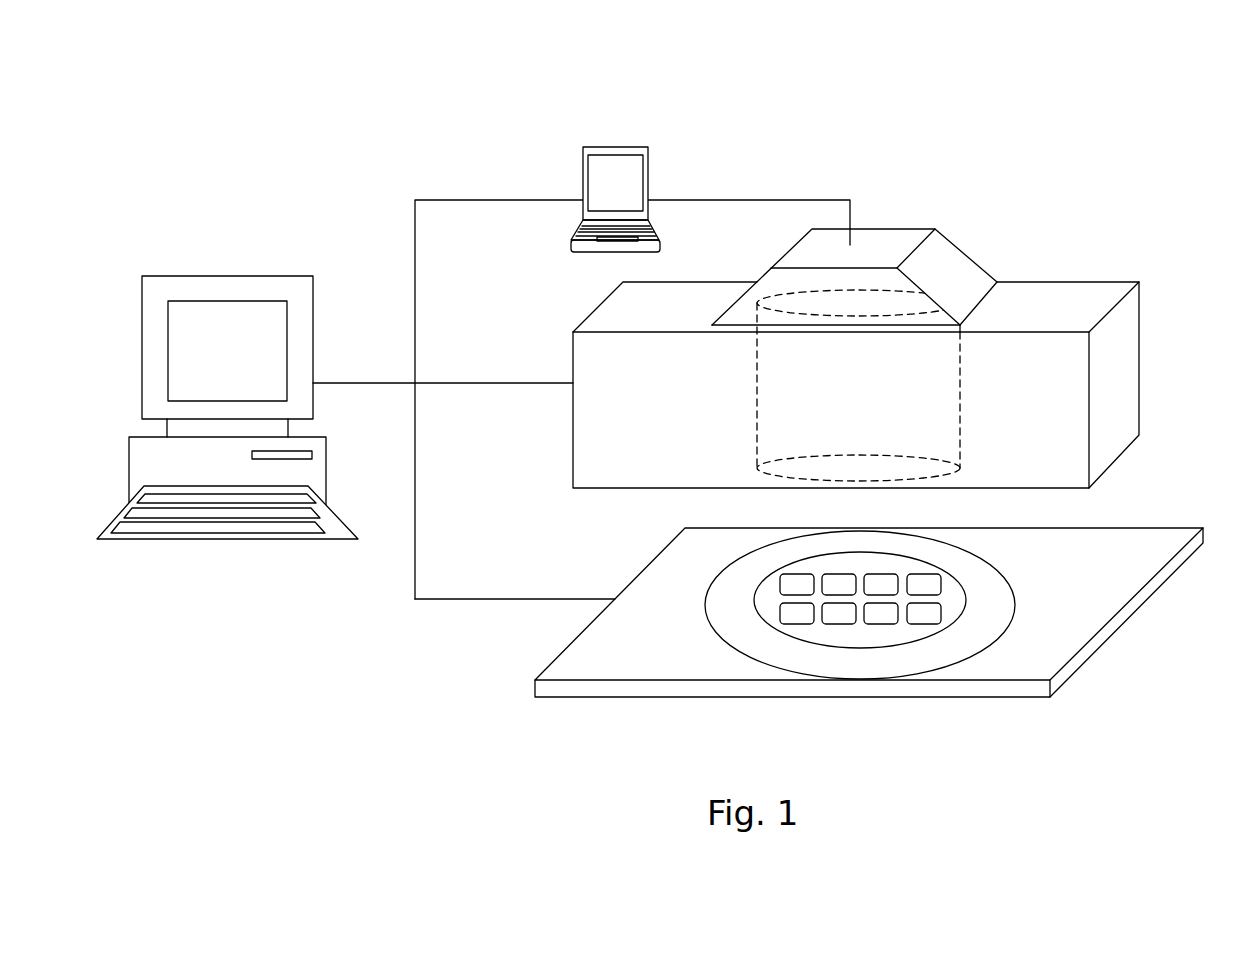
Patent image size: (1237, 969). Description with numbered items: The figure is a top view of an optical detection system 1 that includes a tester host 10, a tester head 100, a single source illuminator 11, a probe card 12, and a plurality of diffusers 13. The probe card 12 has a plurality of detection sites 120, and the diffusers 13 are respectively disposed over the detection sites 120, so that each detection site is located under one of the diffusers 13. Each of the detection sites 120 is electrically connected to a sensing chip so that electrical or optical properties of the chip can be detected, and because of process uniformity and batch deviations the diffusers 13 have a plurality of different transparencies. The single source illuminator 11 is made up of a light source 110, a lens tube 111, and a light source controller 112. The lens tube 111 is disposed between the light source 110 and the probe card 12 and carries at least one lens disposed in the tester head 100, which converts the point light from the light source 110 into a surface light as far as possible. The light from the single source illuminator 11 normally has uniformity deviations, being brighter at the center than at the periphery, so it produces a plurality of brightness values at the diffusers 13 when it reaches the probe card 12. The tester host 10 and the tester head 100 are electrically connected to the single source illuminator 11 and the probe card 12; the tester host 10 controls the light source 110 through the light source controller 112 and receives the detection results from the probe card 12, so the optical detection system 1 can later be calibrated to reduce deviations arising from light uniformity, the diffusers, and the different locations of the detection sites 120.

The optical detection system 1 is at (268, 99).
The tester host 10 is at (228, 275).
The single source illuminator 11 is at (801, 128).
The tester head 100 is at (1125, 367).
The light source 110 is at (973, 265).
The lens tube 111 is at (877, 292).
The light source controller 112 is at (648, 173).
The probe card 12 is at (902, 663).
The detection sites 120 is at (843, 624).
The diffusers 13 is at (798, 614).